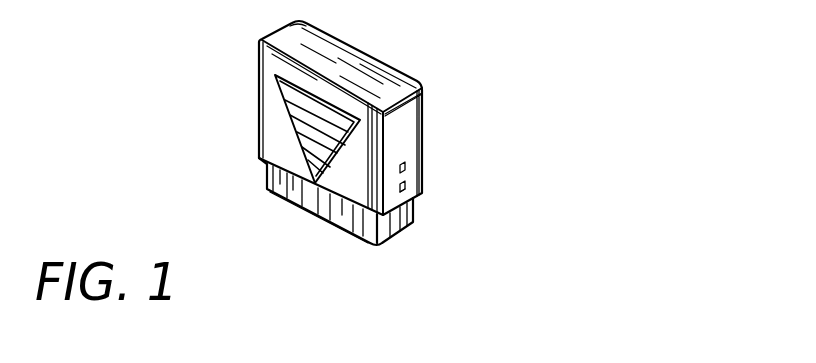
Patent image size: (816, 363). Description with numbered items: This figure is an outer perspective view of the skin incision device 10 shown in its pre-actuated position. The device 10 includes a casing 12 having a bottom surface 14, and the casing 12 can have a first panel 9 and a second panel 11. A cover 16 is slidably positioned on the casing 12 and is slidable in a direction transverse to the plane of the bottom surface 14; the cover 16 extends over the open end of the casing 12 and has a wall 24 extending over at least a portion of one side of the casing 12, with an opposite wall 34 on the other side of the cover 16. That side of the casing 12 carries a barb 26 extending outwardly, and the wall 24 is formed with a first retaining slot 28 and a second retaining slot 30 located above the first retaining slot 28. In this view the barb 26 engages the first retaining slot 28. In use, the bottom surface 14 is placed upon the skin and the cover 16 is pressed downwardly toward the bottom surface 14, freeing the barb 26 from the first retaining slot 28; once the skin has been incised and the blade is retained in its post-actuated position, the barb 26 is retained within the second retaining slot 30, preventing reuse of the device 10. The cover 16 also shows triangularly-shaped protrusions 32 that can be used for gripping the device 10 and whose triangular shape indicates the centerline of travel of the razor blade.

The skin incision device 10 is at (395, 37).
The opposite wall 34 is at (258, 68).
The cover 16 is at (267, 120).
The wall 24 is at (408, 120).
The triangularly-shaped protrusions 32 is at (300, 158).
The casing 12 is at (267, 188).
The second panel 11 is at (313, 212).
The bottom surface 14 is at (367, 243).
The first panel 9 is at (407, 227).
The second retaining slot 30 is at (405, 165).
The barb 26 is at (405, 183).
The first retaining slot 28 is at (403, 188).